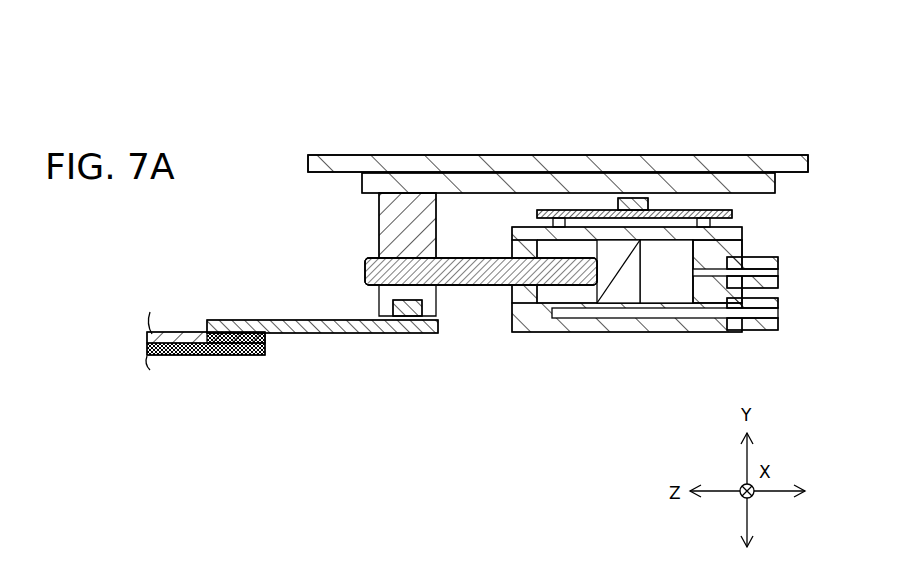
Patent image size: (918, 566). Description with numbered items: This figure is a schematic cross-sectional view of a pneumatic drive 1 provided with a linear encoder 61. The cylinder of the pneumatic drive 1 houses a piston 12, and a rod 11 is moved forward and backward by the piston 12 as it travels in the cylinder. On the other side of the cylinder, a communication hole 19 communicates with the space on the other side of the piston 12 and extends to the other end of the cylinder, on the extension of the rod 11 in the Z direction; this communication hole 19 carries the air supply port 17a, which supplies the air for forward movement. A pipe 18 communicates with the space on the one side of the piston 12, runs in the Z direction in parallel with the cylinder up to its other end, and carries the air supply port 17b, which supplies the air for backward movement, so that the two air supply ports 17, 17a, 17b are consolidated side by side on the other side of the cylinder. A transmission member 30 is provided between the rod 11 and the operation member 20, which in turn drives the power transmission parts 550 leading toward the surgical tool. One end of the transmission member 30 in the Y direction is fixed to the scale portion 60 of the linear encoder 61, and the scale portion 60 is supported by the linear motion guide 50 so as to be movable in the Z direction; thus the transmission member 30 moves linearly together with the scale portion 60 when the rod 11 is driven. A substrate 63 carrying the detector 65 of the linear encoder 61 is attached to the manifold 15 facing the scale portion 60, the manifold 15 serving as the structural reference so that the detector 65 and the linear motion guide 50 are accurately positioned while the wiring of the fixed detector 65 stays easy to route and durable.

The pneumatic drive 1 is at (403, 90).
The rod 11 is at (465, 286).
The piston 12 is at (614, 290).
The manifold 15 is at (742, 233).
The air supply ports 17 is at (788, 294).
The air supply port 17a is at (778, 262).
The air supply port 17b is at (778, 322).
The pipe 18 is at (663, 318).
The communication hole 19 is at (713, 272).
The operation member 20 is at (316, 336).
The transmission member 30 is at (379, 229).
The linear motion guide 50 is at (553, 163).
The scale portion 60 is at (605, 182).
The linear encoder 61 is at (672, 162).
The substrate 63 is at (706, 216).
The detector 65 is at (640, 204).
The power transmission parts 550 is at (195, 346).